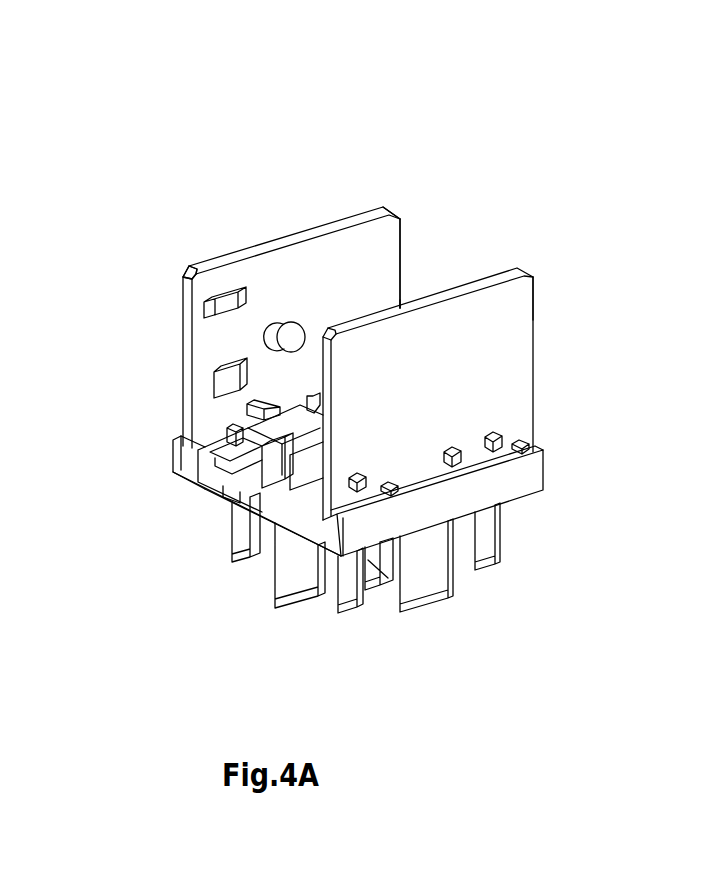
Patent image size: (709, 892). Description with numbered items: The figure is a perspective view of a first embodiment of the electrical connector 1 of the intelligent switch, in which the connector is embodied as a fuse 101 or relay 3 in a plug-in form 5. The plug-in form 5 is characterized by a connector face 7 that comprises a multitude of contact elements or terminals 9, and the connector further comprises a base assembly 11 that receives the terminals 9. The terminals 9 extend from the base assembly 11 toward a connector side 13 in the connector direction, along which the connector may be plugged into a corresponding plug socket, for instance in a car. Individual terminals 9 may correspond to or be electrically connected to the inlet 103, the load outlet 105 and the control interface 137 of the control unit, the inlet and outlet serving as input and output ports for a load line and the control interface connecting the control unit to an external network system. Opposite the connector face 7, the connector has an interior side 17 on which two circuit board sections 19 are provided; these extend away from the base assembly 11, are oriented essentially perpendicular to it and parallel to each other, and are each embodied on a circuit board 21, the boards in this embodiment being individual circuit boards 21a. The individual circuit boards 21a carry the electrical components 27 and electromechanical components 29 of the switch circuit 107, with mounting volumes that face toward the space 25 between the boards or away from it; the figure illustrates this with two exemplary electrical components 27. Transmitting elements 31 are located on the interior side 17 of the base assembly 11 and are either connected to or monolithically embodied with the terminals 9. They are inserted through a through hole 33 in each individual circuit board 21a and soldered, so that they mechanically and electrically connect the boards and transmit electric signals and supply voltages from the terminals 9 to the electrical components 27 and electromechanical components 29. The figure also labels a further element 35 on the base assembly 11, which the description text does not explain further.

The electrical connector 1 is at (258, 221).
The relay 3 is at (355, 334).
The plug-in form 5 is at (334, 188).
The connector face 7 is at (283, 649).
The terminals 9 is at (233, 563).
The base assembly 11 is at (530, 476).
The connector side 13 is at (253, 599).
The interior side 17 is at (550, 371).
The circuit board sections 19 is at (398, 240).
The circuit board 21 is at (379, 285).
The individual circuit boards 21a is at (491, 346).
The space 25 is at (410, 276).
The electrical component 27 is at (201, 308).
The electromechanical component 29 is at (261, 333).
The transmitting elements 31 is at (494, 432).
The through hole 33 is at (352, 464).
The latching hook 35 is at (254, 404).
The fuse 101 is at (388, 177).
The inlet 103 is at (413, 596).
The load outlet 105 is at (228, 499).
The switch circuit 107 is at (184, 269).
The control interface 137 is at (490, 550).